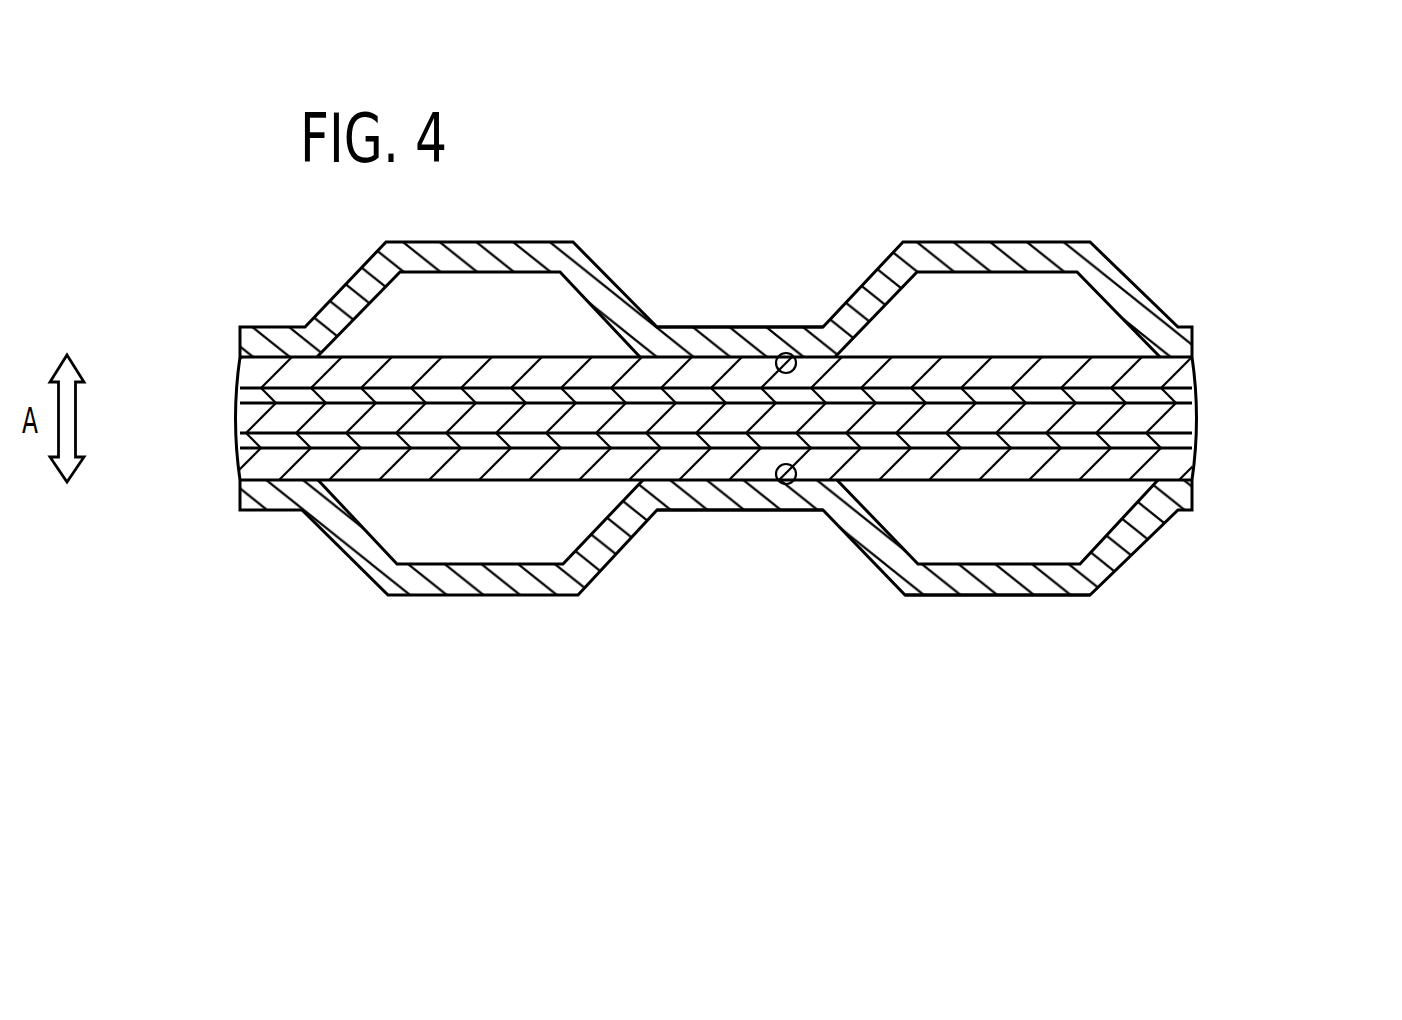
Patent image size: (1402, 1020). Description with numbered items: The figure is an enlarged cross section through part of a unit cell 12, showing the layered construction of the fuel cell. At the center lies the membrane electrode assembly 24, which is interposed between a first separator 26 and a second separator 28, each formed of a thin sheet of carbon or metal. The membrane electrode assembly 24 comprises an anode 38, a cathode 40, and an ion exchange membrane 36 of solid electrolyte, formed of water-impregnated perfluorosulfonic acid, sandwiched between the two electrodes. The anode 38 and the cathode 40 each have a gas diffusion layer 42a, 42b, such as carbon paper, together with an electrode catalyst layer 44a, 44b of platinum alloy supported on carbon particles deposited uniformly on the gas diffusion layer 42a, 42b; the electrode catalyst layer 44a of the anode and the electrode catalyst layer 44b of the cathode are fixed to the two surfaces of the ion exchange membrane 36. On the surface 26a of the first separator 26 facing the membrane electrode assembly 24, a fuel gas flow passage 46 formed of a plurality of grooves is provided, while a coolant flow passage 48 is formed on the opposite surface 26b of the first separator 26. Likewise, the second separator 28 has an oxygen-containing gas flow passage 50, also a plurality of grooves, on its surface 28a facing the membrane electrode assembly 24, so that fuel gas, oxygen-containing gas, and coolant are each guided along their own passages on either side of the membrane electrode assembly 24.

The unit cell 12 is at (1304, 199).
The membrane electrode assembly 24 is at (1325, 340).
The first separator 26 is at (343, 555).
The surface of the first separator 26a is at (793, 480).
The surface of the first separator 26b is at (946, 597).
The second separator 28 is at (348, 278).
The surface of the second separator 28a is at (795, 358).
The ion exchange membrane 36 is at (1195, 414).
The anode 38 is at (1205, 462).
The cathode 40 is at (1203, 377).
The gas diffusion layer 42a is at (240, 470).
The gas diffusion layer 42b is at (240, 369).
The electrode catalyst layer 44a is at (253, 445).
The electrode catalyst layer 44b is at (238, 396).
The fuel gas flow passage 46 is at (738, 522).
The coolant flow passage 48 is at (724, 412).
The oxygen-containing gas flow passage 50 is at (738, 314).